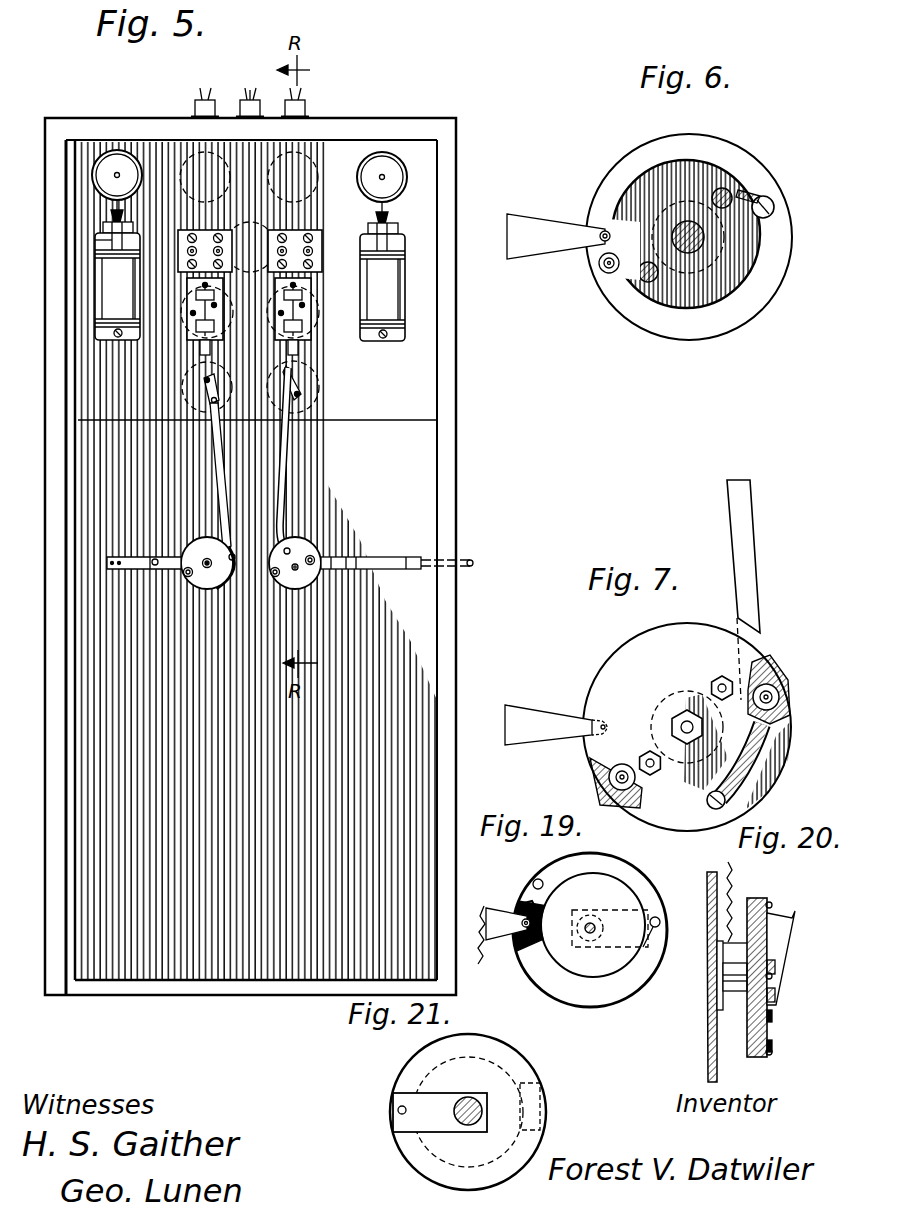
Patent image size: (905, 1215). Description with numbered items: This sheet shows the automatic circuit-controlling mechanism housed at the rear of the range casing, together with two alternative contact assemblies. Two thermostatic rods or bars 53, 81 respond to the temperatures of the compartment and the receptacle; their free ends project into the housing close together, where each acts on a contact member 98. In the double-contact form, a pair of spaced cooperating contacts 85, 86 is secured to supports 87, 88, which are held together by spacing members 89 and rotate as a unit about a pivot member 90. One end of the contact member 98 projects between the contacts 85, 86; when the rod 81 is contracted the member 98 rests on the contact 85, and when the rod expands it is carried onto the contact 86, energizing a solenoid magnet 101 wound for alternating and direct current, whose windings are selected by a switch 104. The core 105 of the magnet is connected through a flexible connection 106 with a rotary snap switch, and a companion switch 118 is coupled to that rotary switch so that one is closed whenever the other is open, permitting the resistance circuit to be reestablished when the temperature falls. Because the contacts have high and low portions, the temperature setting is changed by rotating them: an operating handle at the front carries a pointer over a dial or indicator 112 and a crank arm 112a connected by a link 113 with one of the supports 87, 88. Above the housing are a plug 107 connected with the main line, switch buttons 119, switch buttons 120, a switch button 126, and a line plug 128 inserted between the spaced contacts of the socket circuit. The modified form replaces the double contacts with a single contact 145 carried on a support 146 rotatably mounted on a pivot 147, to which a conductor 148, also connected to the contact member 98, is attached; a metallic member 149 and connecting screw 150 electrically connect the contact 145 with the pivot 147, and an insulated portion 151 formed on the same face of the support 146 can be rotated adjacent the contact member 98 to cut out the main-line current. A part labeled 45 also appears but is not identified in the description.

In FIG. 20, the plate 45 is at (790, 970).
In FIG. 5, the thermostatic rod or bar 53 is at (470, 560).
In FIG. 5, the thermostatic rod or bar 81 is at (146, 556).
In FIG. 5, the contact 85 is at (410, 728).
In FIG. 6, the contact 85 is at (700, 152).
In FIG. 7, the contact 85 is at (772, 682).
In FIG. 7, the contact 86 is at (600, 776).
In FIG. 6, the support 87 is at (782, 238).
In FIG. 7, the support 87 is at (782, 705).
In FIG. 5, the support 88 is at (201, 580).
In FIG. 7, the support 88 is at (620, 665).
In FIG. 6, the spacing members 89 is at (727, 212).
In FIG. 5, the pivot member 90 is at (206, 558).
In FIG. 6, the pivot member 90 is at (698, 250).
In FIG. 7, the pivot member 90 is at (686, 725).
In FIG. 5, the contact member 98 is at (137, 570).
In FIG. 6, the contact member 98 is at (552, 240).
In FIG. 7, the contact member 98 is at (550, 735).
In FIG. 19, the contact member 98 is at (491, 908).
In FIG. 5, the solenoid magnet 101 is at (466, 325).
In FIG. 5, the switch 104 is at (207, 320).
In FIG. 5, the core 105 is at (110, 240).
In FIG. 5, the flexible connection 106 is at (123, 212).
In FIG. 5, the plug 107 is at (302, 110).
In FIG. 5, the dial or indicator 112 is at (338, 405).
In FIG. 5, the crank arm 112a is at (202, 387).
In FIG. 5, the link 113 is at (222, 463).
In FIG. 7, the link 113 is at (737, 535).
In FIG. 5, the switch 118 is at (111, 162).
In FIG. 5, the switch buttons 119 is at (210, 314).
In FIG. 5, the switch buttons 120 is at (270, 175).
In FIG. 5, the switch button 126 is at (260, 225).
In FIG. 5, the line plug 128 is at (248, 98).
In FIG. 19, the single contact member 145 is at (608, 870).
In FIG. 21, the single contact member 145 is at (497, 1055).
In FIG. 19, the support 146 is at (625, 985).
In FIG. 20, the support 146 is at (757, 1025).
In FIG. 21, the support 146 is at (410, 1148).
In FIG. 19, the pivot 147 is at (590, 928).
In FIG. 20, the pivot 147 is at (733, 978).
In FIG. 21, the pivot 147 is at (466, 1128).
In FIG. 19, the conductor 148 is at (480, 964).
In FIG. 20, the conductor 148 is at (728, 862).
In FIG. 19, the metallic member 149 is at (607, 936).
In FIG. 20, the metallic member 149 is at (745, 915).
In FIG. 21, the metallic member 149 is at (440, 1102).
In FIG. 19, the connecting screw 150 is at (651, 930).
In FIG. 21, the connecting screw 150 is at (398, 1110).
In FIG. 19, the insulated portion 151 is at (513, 895).
In FIG. 20, the insulated portion 151 is at (772, 1038).
In FIG. 21, the insulated portion 151 is at (546, 1088).